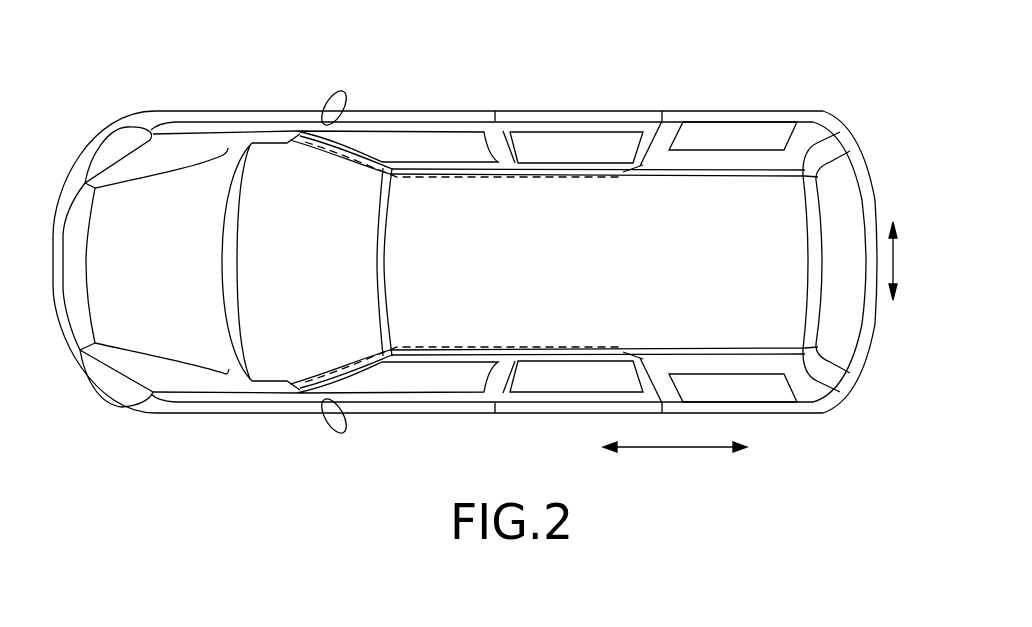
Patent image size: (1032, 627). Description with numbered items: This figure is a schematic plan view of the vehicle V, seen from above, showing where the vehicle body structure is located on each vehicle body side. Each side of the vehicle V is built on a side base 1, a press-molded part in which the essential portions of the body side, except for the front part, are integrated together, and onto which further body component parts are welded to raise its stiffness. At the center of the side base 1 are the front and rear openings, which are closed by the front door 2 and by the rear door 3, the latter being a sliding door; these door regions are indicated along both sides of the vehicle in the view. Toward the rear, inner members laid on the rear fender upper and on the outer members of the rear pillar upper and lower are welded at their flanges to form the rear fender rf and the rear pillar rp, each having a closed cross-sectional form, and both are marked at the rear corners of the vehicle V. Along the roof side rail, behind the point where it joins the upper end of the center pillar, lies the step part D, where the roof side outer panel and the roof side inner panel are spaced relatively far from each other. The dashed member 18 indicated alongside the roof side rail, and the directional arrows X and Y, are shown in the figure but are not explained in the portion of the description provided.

The side base 1 is at (683, 109).
The front door 2 is at (408, 111).
The rear door 3 is at (568, 111).
The roof side rail reinforcement 18 is at (487, 178).
The step part D is at (524, 188).
The vehicle V is at (772, 91).
The longitudinal direction X is at (687, 449).
The lateral direction Y is at (897, 263).
The rear fender rf is at (740, 111).
The rear pillar rp is at (806, 138).